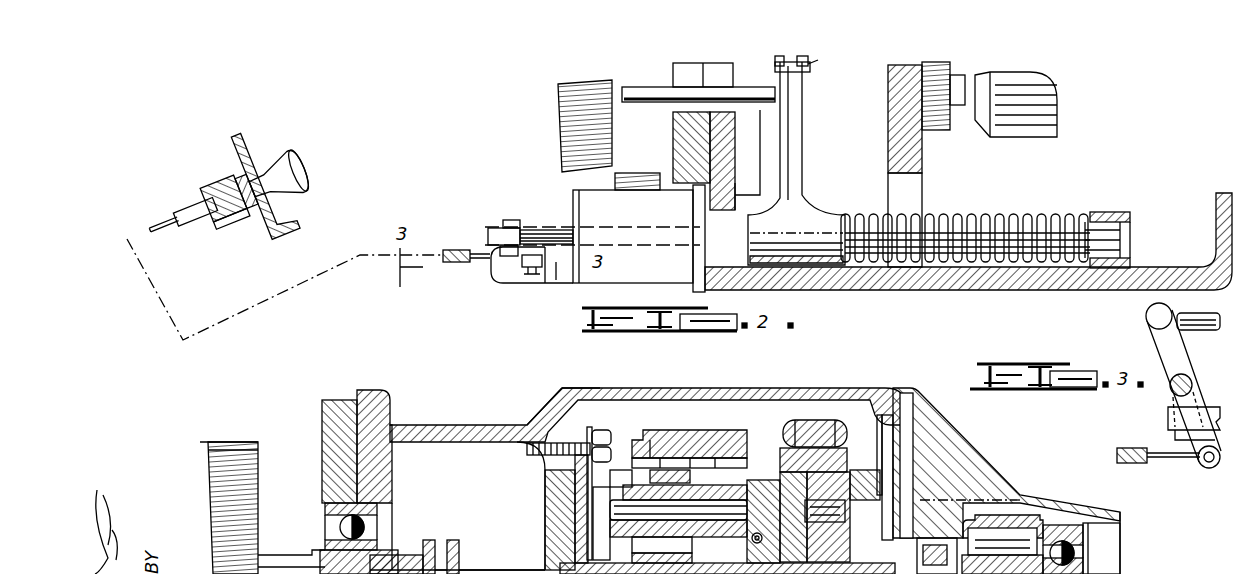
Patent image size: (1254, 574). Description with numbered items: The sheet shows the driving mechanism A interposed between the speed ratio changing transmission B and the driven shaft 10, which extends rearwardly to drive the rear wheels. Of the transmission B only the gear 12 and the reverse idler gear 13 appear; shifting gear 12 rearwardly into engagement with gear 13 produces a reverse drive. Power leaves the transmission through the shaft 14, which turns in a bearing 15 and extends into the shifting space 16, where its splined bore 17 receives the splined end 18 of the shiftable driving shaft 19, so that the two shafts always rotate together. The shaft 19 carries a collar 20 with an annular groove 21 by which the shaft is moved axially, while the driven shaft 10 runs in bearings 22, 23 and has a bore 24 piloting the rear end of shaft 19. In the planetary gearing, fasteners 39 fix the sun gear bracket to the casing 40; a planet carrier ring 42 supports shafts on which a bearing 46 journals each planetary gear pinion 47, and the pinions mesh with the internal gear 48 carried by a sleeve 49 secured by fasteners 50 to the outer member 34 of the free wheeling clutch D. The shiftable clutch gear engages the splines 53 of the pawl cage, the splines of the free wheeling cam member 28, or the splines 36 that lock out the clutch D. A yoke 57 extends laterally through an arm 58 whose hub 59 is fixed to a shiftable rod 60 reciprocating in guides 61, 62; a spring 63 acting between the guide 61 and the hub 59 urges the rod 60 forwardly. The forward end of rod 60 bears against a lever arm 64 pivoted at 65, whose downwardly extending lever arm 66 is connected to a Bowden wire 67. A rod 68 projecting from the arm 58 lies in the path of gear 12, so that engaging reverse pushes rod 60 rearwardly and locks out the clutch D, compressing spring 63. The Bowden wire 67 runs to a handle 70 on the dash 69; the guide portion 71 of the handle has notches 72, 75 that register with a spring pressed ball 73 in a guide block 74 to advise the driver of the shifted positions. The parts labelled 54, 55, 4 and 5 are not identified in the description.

In FIG. 1, the driven shaft 10 is at (1142, 573).
In FIG. 2, the gear 12 is at (556, 96).
In FIG. 1, the gear 12 is at (210, 443).
In FIG. 2, the reverse idler gear 13 is at (644, 174).
In FIG. 1, the power driving shaft 14 is at (300, 556).
In FIG. 1, the bearing 15 is at (318, 520).
In FIG. 2, the shifting space 16 is at (874, 262).
In FIG. 1, the shifting space 16 is at (452, 455).
In FIG. 1, the splined bore 17 is at (400, 555).
In FIG. 1, the splined end 18 is at (396, 525).
In FIG. 1, the shiftable driving shaft 19 is at (508, 572).
In FIG. 2, the collar 20 is at (812, 72).
In FIG. 1, the collar 20 is at (458, 540).
In FIG. 1, the annular groove 21 is at (436, 540).
In FIG. 1, the bearing 22 is at (1072, 525).
In FIG. 1, the bearing 23 is at (1003, 528).
In FIG. 1, the bore 24 is at (986, 573).
In FIG. 1, the free wheeling cam member 28 is at (898, 477).
In FIG. 1, the outer member 34 is at (838, 448).
In FIG. 1, the splines 36 is at (874, 543).
In FIG. 1, the fasteners 39 is at (606, 430).
In FIG. 1, the casing 40 is at (540, 420).
In FIG. 1, the planet carrier ring 42 is at (689, 434).
In FIG. 1, the bearing 46 is at (700, 465).
In FIG. 1, the planetary gear pinion 47 is at (683, 445).
In FIG. 1, the internal gear 48 is at (746, 440).
In FIG. 1, the sleeve 49 is at (748, 440).
In FIG. 1, the fasteners 50 is at (824, 420).
In FIG. 1, the internal teeth or splines 53 is at (812, 522).
In FIG. 1, the bushing 54 is at (828, 468).
In FIG. 1, the rivet 55 is at (775, 468).
In FIG. 2, the yoke 57 is at (806, 88).
In FIG. 2, the arm 58 is at (802, 140).
In FIG. 2, the hub 59 is at (802, 212).
In FIG. 2, the shiftable rod 60 is at (557, 205).
In FIG. 3, the shiftable rod 60 is at (1198, 332).
In FIG. 2, the guide 61 is at (1100, 212).
In FIG. 2, the guide 62 is at (612, 272).
In FIG. 2, the spring 63 is at (978, 215).
In FIG. 2, the lever arm 64 is at (488, 232).
In FIG. 3, the lever arm 64 is at (1168, 316).
In FIG. 3, the pivot 65 is at (1192, 388).
In FIG. 3, the lever arm 66 is at (1200, 437).
In FIG. 2, the Bowden wire 67 is at (340, 265).
In FIG. 3, the Bowden wire 67 is at (1172, 462).
In FIG. 2, the rod 68 is at (648, 88).
In FIG. 2, the dash 69 is at (243, 137).
In FIG. 2, the handle 70 is at (300, 163).
In FIG. 2, the guide portion 71 is at (173, 215).
In FIG. 2, the notch 72 is at (200, 200).
In FIG. 2, the spring pressed ball 73 is at (247, 167).
In FIG. 2, the guide block 74 is at (210, 173).
In FIG. 2, the notch 75 is at (233, 217).
In FIG. 1, the arrow 4 is at (838, 452).
In FIG. 1, the arrow 5 is at (764, 453).
In FIG. 1, the driving mechanism A is at (579, 388).
In FIG. 1, the speed ratio changing transmission B is at (270, 435).
In FIG. 1, the free wheeling clutch D is at (860, 497).